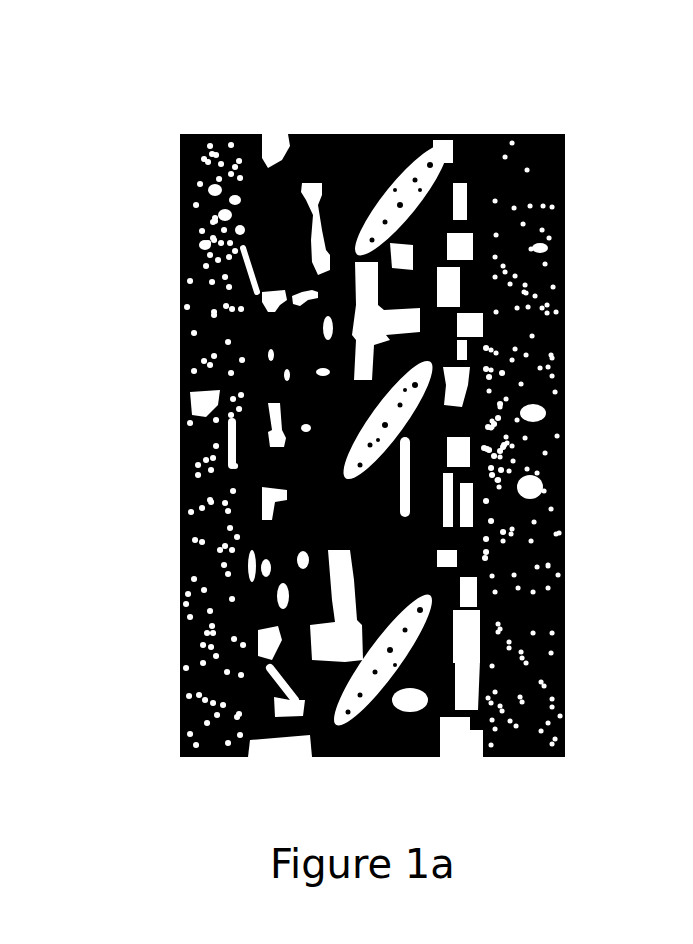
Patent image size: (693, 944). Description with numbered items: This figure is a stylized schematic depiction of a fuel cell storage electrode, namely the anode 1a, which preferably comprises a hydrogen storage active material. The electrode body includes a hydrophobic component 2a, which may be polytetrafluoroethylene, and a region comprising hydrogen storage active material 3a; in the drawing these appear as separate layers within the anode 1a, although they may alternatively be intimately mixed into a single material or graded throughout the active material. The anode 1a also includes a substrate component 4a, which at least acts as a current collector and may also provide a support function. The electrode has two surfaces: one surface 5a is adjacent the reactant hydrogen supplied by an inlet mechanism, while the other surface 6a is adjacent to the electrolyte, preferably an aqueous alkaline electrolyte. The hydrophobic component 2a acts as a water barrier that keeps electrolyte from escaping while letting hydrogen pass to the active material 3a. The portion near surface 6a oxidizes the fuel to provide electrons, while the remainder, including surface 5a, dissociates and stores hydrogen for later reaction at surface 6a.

The anode 1a is at (285, 115).
The hydrophobic component 2a is at (362, 748).
The region comprising hydrogen storage active material 3a is at (183, 662).
The substrate component 4a is at (384, 187).
The surface adjacent a reactant 5a is at (155, 447).
The surface adjacent to the electrolyte 6a is at (605, 464).